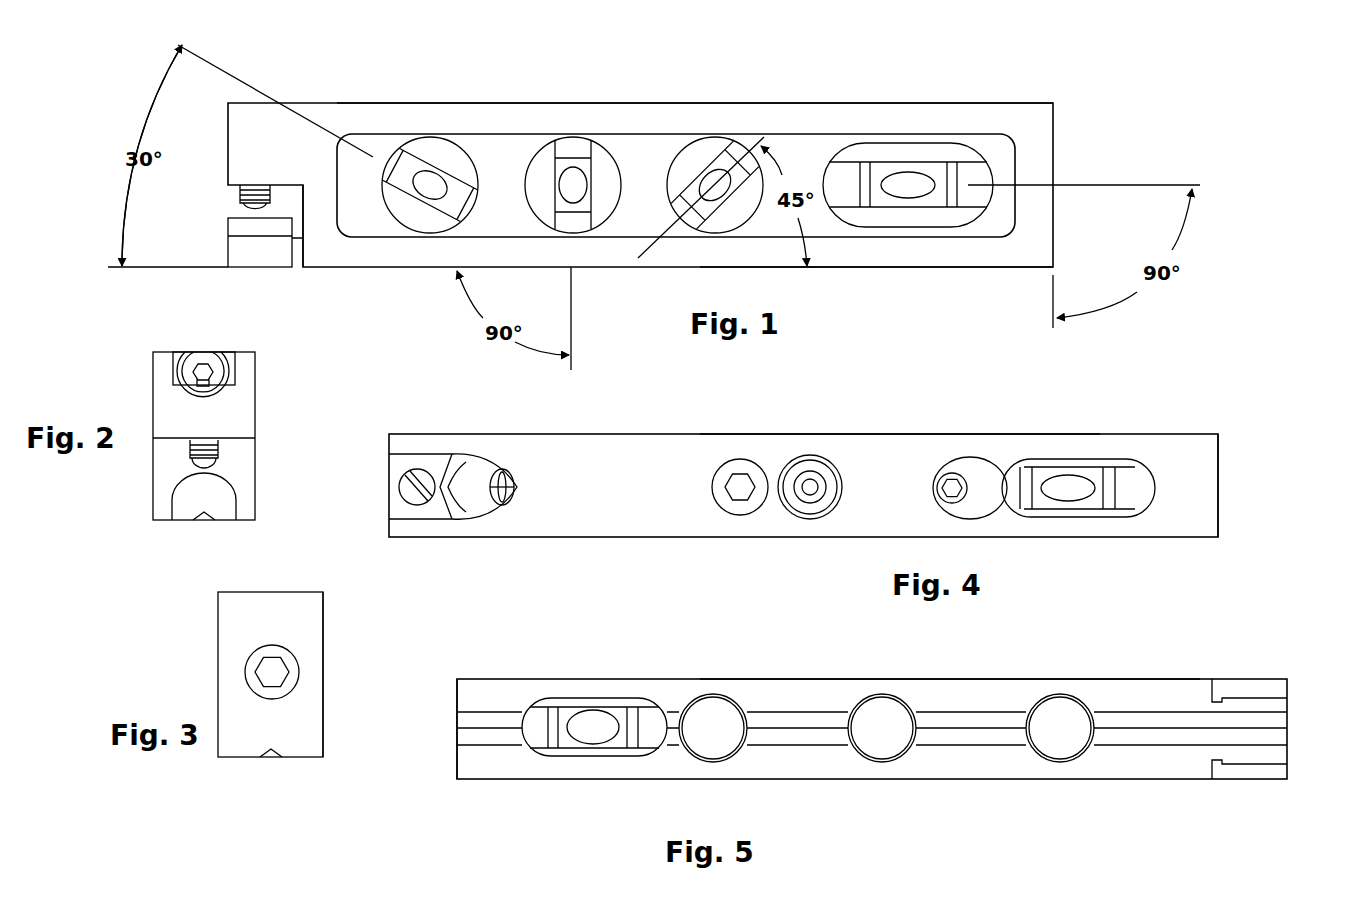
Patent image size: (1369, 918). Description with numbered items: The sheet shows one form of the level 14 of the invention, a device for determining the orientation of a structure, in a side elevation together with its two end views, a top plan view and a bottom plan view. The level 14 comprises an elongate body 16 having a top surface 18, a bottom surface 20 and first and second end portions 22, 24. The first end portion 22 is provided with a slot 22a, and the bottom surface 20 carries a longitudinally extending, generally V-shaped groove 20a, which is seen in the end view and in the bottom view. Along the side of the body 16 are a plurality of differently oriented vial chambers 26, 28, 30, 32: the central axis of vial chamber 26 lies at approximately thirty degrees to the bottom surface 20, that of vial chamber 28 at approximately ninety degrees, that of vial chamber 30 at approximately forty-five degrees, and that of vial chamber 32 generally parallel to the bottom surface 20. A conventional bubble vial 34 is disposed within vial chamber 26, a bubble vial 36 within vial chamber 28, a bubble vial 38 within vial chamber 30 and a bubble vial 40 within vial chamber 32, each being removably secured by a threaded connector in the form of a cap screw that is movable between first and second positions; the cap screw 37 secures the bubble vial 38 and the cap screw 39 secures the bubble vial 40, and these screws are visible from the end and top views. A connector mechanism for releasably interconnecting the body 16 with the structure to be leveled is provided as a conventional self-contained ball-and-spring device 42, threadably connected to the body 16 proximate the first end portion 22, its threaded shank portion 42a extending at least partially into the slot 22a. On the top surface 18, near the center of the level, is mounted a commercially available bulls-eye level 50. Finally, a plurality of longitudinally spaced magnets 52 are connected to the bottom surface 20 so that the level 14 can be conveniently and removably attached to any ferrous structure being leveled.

In FIG. 1, the level 14 is at (851, 92).
In FIG. 2, the level 14 is at (136, 369).
In FIG. 3, the level 14 is at (197, 606).
In FIG. 4, the level 14 is at (930, 421).
In FIG. 5, the level 14 is at (1147, 642).
In FIG. 1, the elongate body 16 is at (970, 112).
In FIG. 4, the elongate body 16 is at (1068, 434).
In FIG. 5, the elongate body 16 is at (1167, 692).
In FIG. 1, the top surface 18 is at (340, 103).
In FIG. 4, the top surface 18 is at (616, 494).
In FIG. 5, the bottom surface 20 is at (985, 760).
In FIG. 3, the groove 20a is at (276, 758).
In FIG. 5, the groove 20a is at (467, 732).
In FIG. 1, the first end portion 22 is at (266, 274).
In FIG. 2, the first end portion 22 is at (255, 397).
In FIG. 4, the first end portion 22 is at (465, 420).
In FIG. 5, the first end portion 22 is at (1270, 668).
In FIG. 1, the slot 22a is at (240, 213).
In FIG. 2, the slot 22a is at (237, 440).
In FIG. 1, the second end portion 24 is at (1020, 273).
In FIG. 3, the second end portion 24 is at (323, 632).
In FIG. 4, the second end portion 24 is at (1196, 431).
In FIG. 5, the second end portion 24 is at (458, 672).
In FIG. 1, the vial chamber 26 is at (400, 158).
In FIG. 1, the vial chamber 28 is at (576, 150).
In FIG. 1, the vial chamber 30 is at (732, 150).
In FIG. 1, the vial chamber 32 is at (980, 175).
In FIG. 1, the bubble vial 34 is at (428, 207).
In FIG. 1, the bubble vial 36 is at (555, 203).
In FIG. 4, the cap screw 37 is at (717, 473).
In FIG. 1, the bubble vial 38 is at (692, 180).
In FIG. 3, the cap screw 39 is at (246, 663).
In FIG. 1, the bubble vial 40 is at (880, 200).
In FIG. 2, the ball-and-spring device 42 is at (190, 452).
In FIG. 1, the threaded shank portion 42a is at (240, 193).
In FIG. 4, the bulls-eye level 50 is at (817, 457).
In FIG. 5, the magnets 52 is at (712, 694).